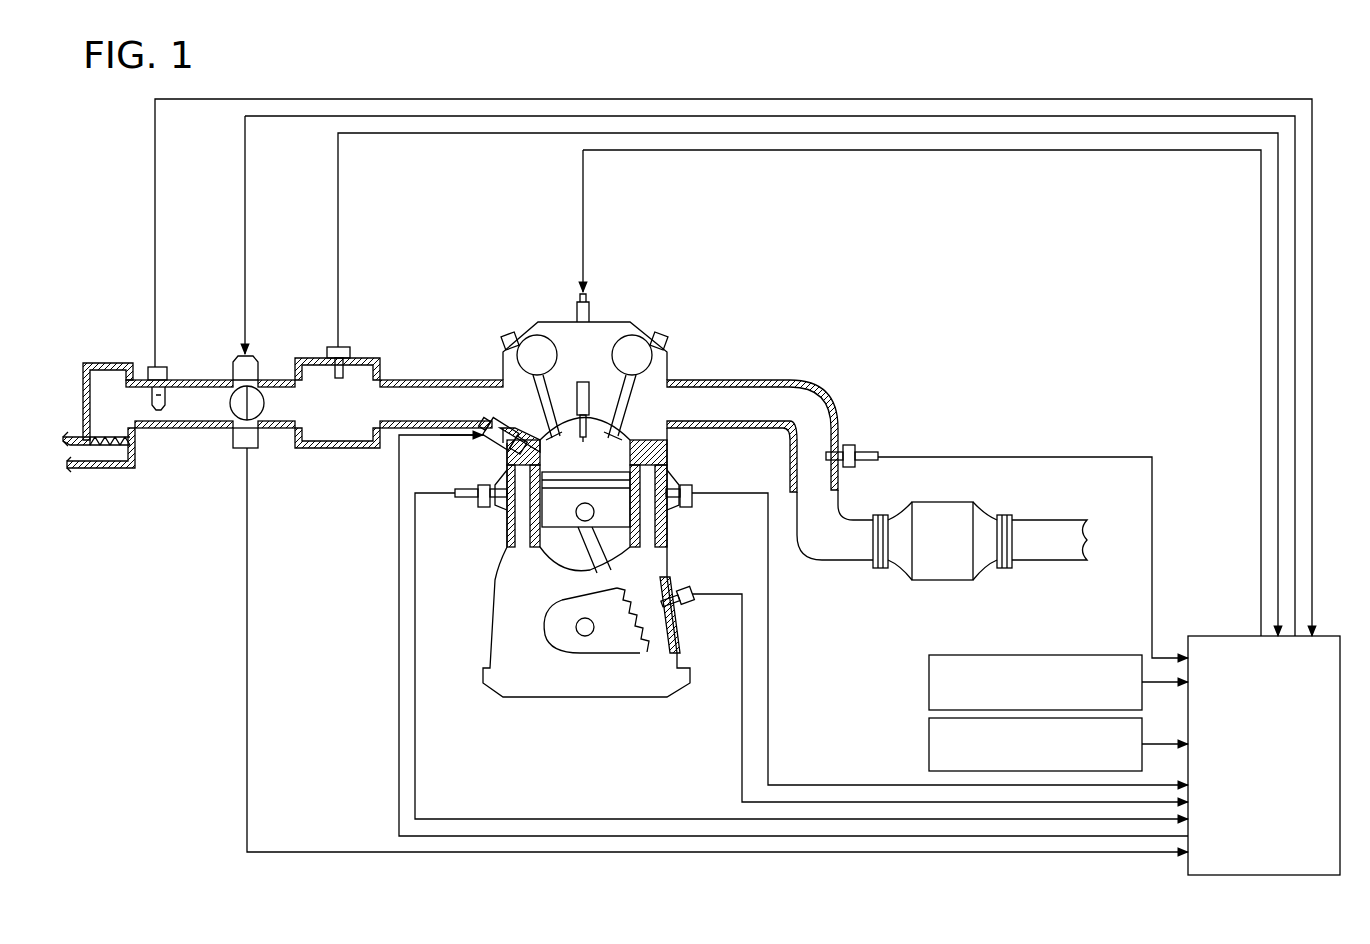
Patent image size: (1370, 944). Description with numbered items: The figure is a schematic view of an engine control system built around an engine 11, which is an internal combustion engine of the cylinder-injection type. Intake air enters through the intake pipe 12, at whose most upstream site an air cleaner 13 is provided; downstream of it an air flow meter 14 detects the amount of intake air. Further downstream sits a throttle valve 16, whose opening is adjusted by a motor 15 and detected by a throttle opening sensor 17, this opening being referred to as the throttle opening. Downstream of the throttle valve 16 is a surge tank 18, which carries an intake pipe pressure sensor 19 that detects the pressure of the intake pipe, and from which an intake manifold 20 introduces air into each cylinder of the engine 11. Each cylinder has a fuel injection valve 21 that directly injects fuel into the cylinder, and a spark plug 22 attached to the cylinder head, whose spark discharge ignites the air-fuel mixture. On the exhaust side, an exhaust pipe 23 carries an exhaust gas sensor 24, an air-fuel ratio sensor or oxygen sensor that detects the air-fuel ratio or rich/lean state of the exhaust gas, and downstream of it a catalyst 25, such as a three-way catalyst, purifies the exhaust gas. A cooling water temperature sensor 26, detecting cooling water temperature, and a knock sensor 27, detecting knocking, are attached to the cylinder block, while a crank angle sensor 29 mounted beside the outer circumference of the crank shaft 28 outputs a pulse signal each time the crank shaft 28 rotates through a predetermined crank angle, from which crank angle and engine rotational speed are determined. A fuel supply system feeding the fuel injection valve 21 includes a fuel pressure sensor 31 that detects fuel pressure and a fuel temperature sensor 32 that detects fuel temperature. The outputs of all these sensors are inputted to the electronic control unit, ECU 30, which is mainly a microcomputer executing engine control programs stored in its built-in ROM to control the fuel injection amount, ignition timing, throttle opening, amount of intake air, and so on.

The engine 11 is at (638, 320).
The intake pipe 12 is at (196, 380).
The air cleaner 13 is at (106, 445).
The air flow meter 14 is at (148, 367).
The motor 15 is at (230, 358).
The throttle valve 16 is at (230, 405).
The throttle opening sensor 17 is at (255, 448).
The surge tank 18 is at (338, 448).
The intake pipe pressure sensor 19 is at (335, 347).
The intake manifold 20 is at (440, 380).
The fuel injection valve 21 is at (488, 448).
The spark plug 22 is at (592, 402).
The exhaust pipe 23 is at (786, 380).
The exhaust gas sensor 24 is at (853, 445).
The catalyst 25 is at (945, 502).
The cooling water temperature sensor 26 is at (488, 500).
The knock sensor 27 is at (688, 502).
The crank shaft 28 is at (585, 636).
The crank angle sensor 29 is at (686, 602).
The electronic control unit (ECU) 30 is at (1222, 636).
The fuel pressure sensor 31 is at (929, 680).
The fuel temperature sensor 32 is at (929, 740).